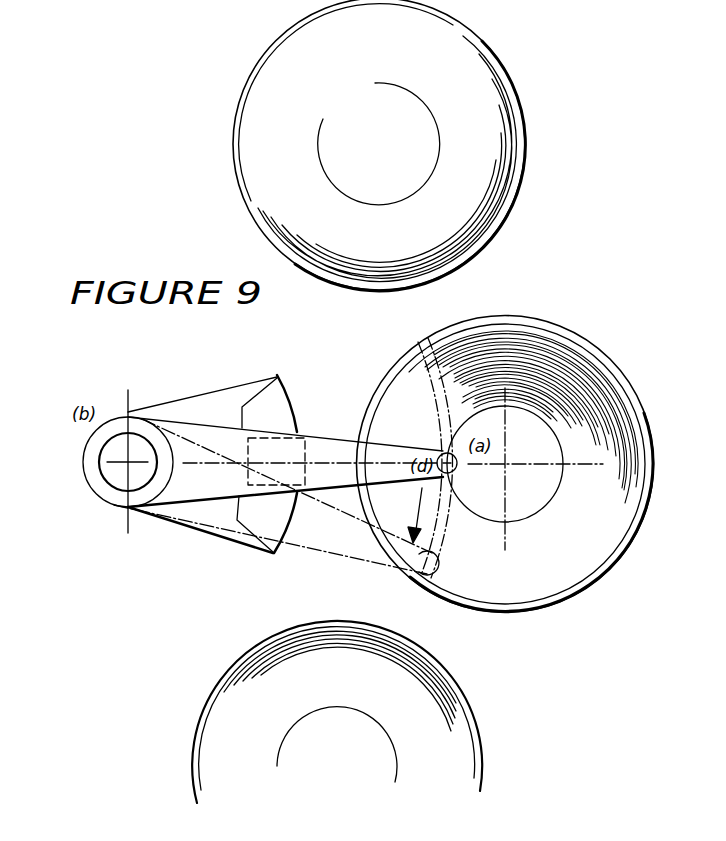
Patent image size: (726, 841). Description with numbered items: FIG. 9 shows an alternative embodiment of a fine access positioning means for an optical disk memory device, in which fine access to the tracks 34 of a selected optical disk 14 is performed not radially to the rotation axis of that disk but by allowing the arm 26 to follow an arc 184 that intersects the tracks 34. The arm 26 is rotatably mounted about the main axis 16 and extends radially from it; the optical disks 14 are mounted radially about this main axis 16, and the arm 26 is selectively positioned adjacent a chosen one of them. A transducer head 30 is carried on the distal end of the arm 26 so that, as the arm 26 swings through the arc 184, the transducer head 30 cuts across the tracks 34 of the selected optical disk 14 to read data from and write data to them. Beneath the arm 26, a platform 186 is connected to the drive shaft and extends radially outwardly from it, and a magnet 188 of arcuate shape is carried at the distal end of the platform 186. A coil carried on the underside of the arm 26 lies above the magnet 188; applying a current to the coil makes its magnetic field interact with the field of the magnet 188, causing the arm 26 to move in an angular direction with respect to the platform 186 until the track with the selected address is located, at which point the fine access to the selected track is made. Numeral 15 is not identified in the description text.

The optical disk 14 is at (602, 353).
The disc center spindle 15 is at (507, 463).
The main axis 16 is at (125, 466).
The arm 26 is at (311, 437).
The transducer head 30 is at (443, 452).
The tracks 34 is at (530, 347).
The arc 184 is at (452, 540).
The platform 186 is at (192, 396).
The magnet 188 is at (270, 415).